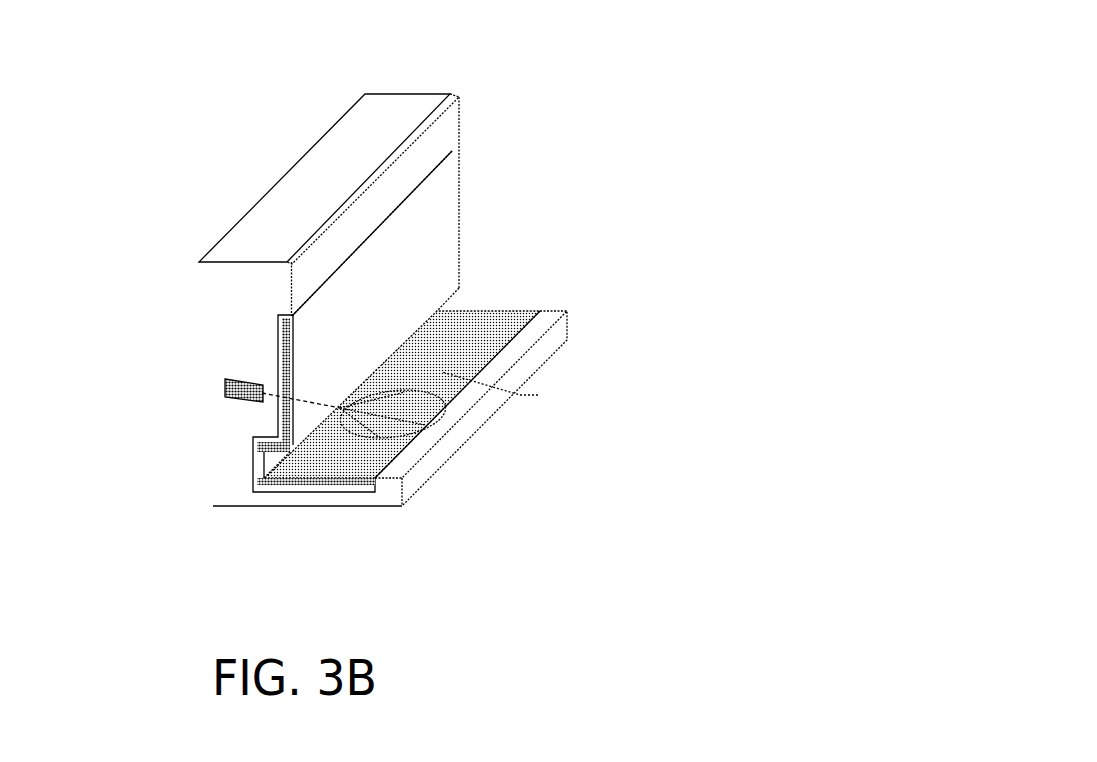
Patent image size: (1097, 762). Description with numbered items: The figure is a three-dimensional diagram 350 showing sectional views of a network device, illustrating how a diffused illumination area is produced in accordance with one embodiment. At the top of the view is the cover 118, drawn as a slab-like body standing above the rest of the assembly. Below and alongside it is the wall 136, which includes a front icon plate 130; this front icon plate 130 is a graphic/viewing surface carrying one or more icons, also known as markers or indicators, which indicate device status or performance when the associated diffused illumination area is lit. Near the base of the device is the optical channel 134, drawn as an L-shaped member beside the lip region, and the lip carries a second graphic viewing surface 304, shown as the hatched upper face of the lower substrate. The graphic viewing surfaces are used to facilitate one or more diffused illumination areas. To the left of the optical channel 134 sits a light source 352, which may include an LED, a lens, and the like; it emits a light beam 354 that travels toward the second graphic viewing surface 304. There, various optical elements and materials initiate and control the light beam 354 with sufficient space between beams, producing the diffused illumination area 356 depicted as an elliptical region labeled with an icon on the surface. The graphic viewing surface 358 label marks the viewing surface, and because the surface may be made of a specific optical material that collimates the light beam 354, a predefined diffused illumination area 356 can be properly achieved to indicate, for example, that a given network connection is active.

The three-dimensional diagram 350 is at (836, 128).
The cover 118 is at (368, 124).
The wall 136 is at (450, 122).
The front icon plate 130 is at (442, 207).
The graphic/viewing surface 358 is at (365, 353).
The second graphic viewing surface 304 is at (482, 332).
The diffused illumination area 356 is at (405, 438).
The optical channel 134 is at (268, 458).
The light source 352 is at (249, 380).
The light beam 354 is at (272, 402).